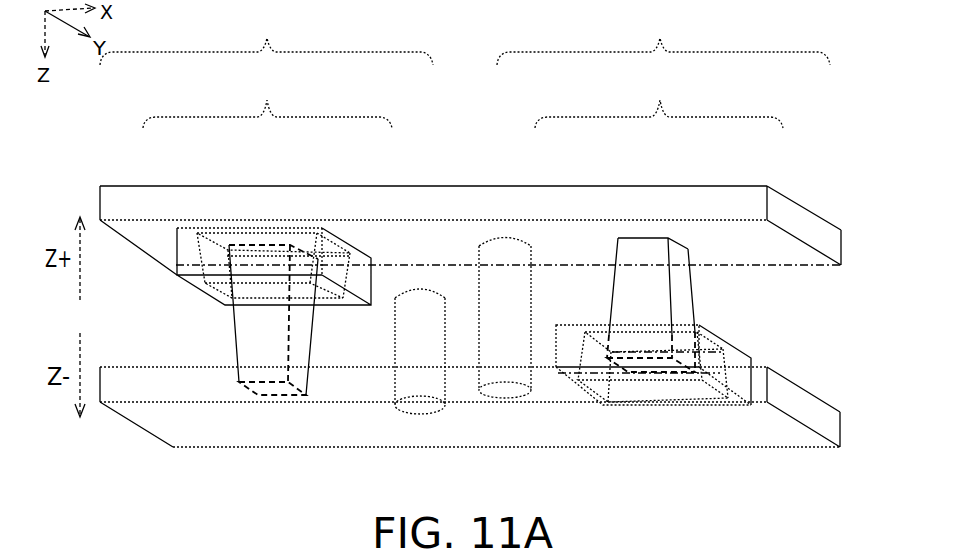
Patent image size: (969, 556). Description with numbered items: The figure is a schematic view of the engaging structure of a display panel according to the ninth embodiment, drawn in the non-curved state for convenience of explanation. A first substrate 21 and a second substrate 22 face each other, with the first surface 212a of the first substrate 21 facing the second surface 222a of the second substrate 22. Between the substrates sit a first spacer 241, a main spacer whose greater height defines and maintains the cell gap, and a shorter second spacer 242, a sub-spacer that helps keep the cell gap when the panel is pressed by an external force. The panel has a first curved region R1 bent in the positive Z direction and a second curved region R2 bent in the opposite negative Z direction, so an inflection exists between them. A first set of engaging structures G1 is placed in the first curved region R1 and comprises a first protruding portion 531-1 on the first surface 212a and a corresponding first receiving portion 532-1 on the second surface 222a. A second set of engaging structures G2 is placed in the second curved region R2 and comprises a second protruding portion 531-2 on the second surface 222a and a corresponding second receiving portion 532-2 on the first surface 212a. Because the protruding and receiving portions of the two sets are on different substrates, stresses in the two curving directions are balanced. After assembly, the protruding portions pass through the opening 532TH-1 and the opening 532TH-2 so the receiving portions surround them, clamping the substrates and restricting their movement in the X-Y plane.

The first substrate 21 is at (497, 386).
The second substrate 22 is at (495, 242).
The first surface 212a is at (763, 365).
The second surface 222a is at (746, 252).
The first spacer 241 is at (497, 250).
The second spacer 242 is at (418, 307).
The first protruding portion 531-1 is at (252, 337).
The second protruding portion 531-2 is at (628, 250).
The first receiving portion 532-1 is at (265, 224).
The second receiving portion 532-2 is at (657, 411).
The opening 532TH-1 is at (305, 242).
The opening 532TH-2 is at (607, 403).
The first curved region R1 is at (266, 37).
The second curved region R2 is at (663, 37).
The first set of engaging structures G1 is at (267, 98).
The second set of engaging structures G2 is at (659, 98).